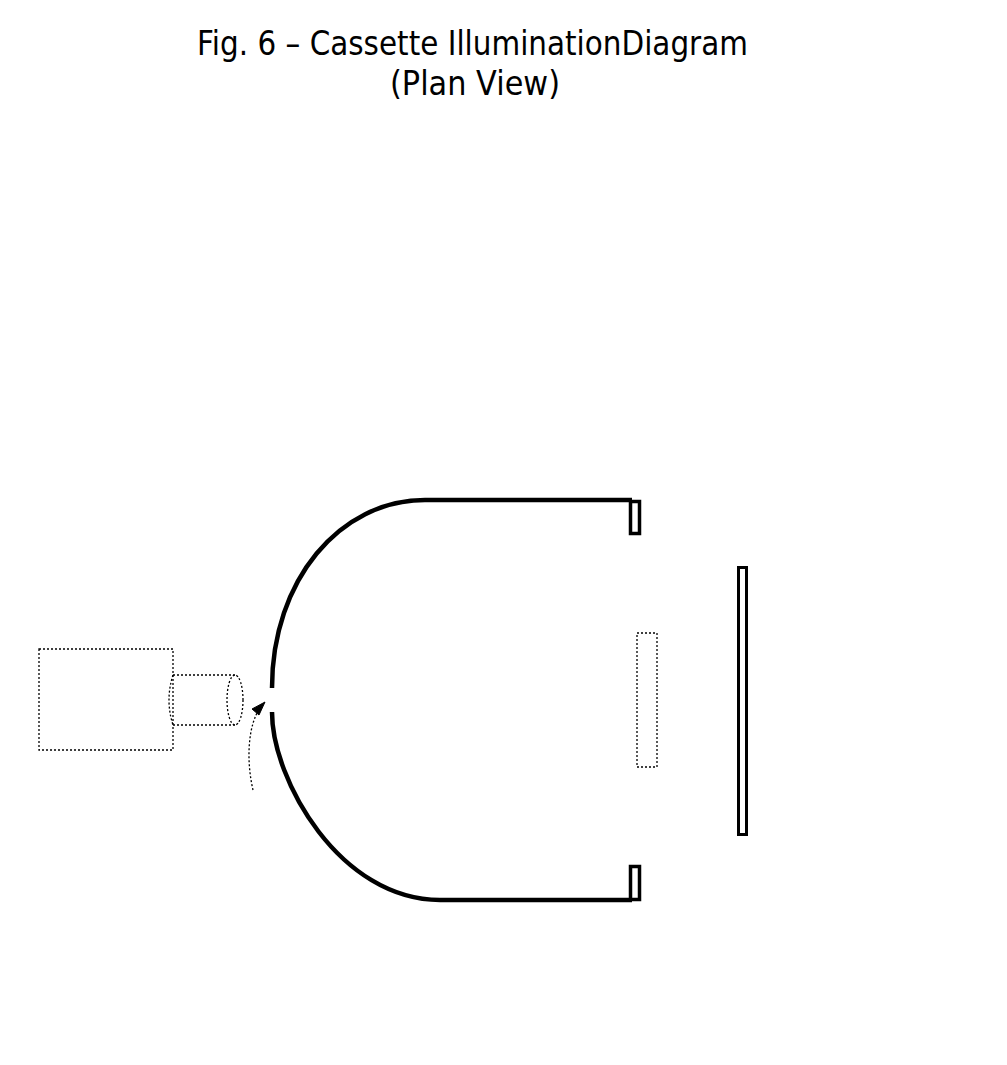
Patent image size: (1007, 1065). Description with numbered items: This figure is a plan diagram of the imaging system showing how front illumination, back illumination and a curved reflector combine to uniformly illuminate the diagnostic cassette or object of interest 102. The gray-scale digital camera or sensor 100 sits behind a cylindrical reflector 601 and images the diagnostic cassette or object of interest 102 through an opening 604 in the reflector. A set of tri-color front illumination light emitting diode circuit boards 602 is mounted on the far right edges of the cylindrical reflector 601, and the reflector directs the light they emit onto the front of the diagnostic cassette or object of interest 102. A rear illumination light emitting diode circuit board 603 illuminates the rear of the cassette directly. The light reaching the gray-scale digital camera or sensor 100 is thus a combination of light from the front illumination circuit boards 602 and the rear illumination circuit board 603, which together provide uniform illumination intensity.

The gray-scale digital camera or sensor 100 is at (107, 649).
The diagnostic cassette or object of interest 102 is at (637, 692).
The cylindrical reflector 601 is at (472, 497).
The front illumination light emitting diode circuit boards 602 is at (631, 498).
The rear illumination light emitting diode circuit board 603 is at (742, 564).
The opening 604 is at (255, 763).